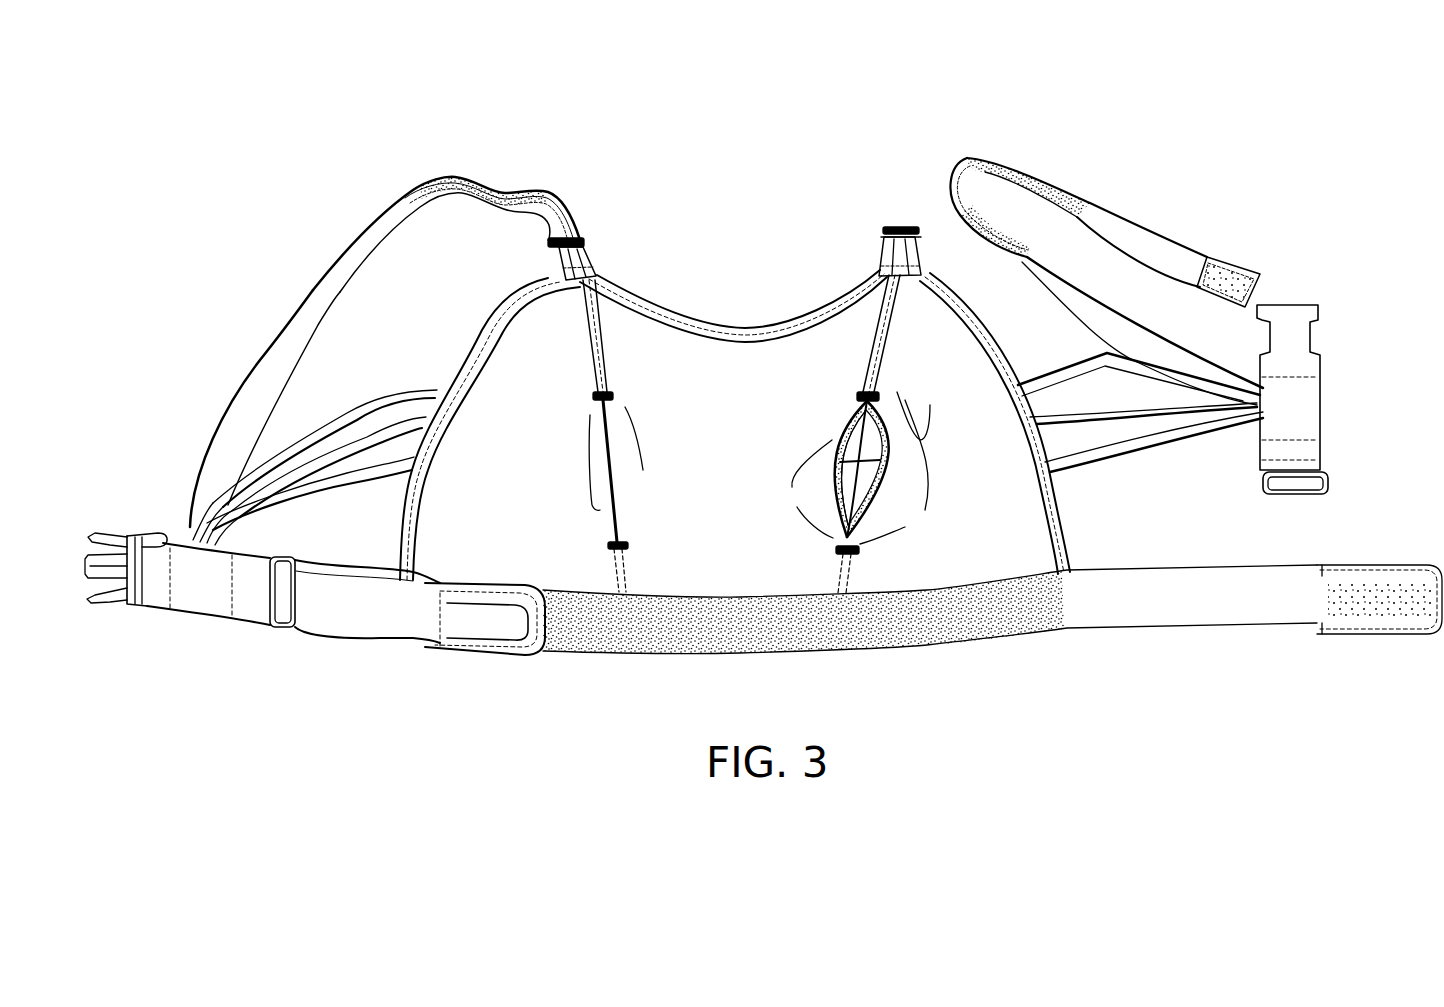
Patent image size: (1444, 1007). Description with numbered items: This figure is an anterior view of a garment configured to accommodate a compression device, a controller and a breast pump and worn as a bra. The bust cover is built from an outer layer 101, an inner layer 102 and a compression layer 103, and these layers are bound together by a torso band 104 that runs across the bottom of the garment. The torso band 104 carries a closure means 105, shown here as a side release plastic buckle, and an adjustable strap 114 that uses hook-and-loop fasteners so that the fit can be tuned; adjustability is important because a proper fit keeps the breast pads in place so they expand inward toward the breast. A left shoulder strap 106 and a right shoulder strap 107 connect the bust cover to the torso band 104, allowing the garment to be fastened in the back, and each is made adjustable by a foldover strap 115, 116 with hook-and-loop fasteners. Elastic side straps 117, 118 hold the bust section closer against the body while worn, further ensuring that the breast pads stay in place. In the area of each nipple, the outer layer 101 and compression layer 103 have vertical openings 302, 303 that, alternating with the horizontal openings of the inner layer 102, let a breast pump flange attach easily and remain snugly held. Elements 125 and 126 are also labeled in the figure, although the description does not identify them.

The outer layer 101 is at (708, 370).
The inner layer 102 is at (853, 410).
The compression layer 103 is at (888, 476).
The torso band 104 is at (1125, 618).
The closure means 105 is at (157, 597).
The left shoulder strap 106 is at (963, 183).
The right shoulder strap 107 is at (298, 311).
The adjustable strap 114 is at (472, 620).
The foldover strap 115 is at (497, 193).
The foldover strap 116 is at (1042, 182).
The elastic side strap 117 is at (1053, 367).
The elastic side strap 118 is at (380, 381).
The strap buckle 125 is at (1306, 401).
The hook and loop fastener end 126 is at (1393, 567).
The vertical opening 302 is at (830, 440).
The vertical opening 303 is at (619, 494).